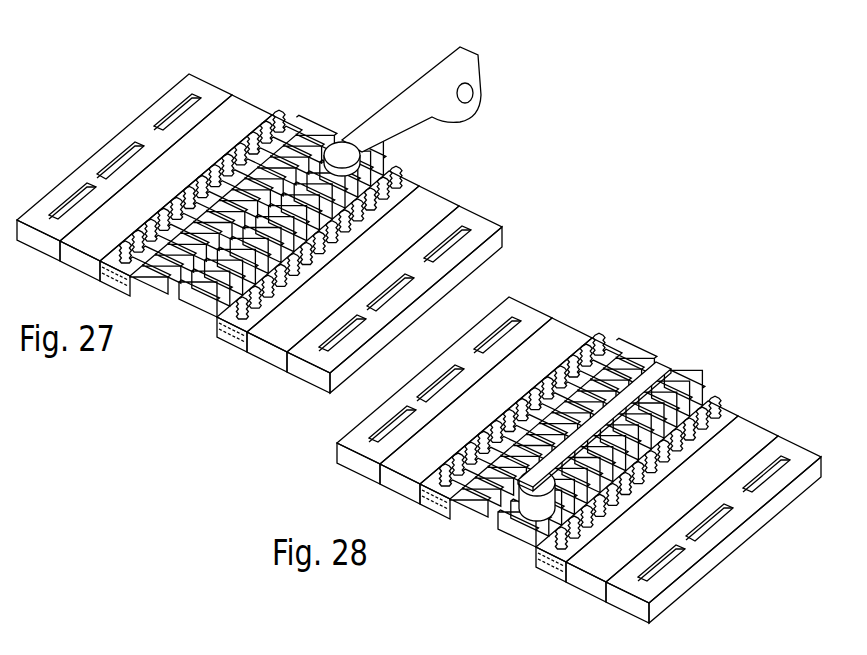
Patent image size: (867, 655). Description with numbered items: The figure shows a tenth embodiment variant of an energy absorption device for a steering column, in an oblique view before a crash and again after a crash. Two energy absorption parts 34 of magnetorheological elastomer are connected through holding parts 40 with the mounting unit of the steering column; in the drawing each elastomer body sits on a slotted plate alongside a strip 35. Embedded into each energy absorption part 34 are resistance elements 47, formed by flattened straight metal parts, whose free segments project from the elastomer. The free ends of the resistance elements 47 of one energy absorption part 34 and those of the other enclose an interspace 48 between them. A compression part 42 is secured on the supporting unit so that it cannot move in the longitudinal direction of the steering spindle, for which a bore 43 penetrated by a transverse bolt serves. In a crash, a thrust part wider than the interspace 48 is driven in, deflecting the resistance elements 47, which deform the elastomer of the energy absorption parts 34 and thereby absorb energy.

In FIG. 27, the energy absorption part 34 is at (285, 132).
In FIG. 28, the energy absorption part 34 is at (595, 345).
In FIG. 27, the pin strip 35 is at (243, 118).
In FIG. 28, the pin strip 35 is at (557, 330).
In FIG. 27, the holding part 40 is at (130, 137).
In FIG. 28, the holding part 40 is at (579, 460).
In FIG. 27, the compression part 42 is at (373, 133).
In FIG. 28, the compression part 42 is at (653, 370).
In FIG. 27, the bore 43 is at (472, 91).
In FIG. 27, the resistance element 47 is at (197, 320).
In FIG. 28, the resistance element 47 is at (632, 375).
In FIG. 27, the interspace 48 is at (207, 323).
In FIG. 28, the interspace 48 is at (508, 533).